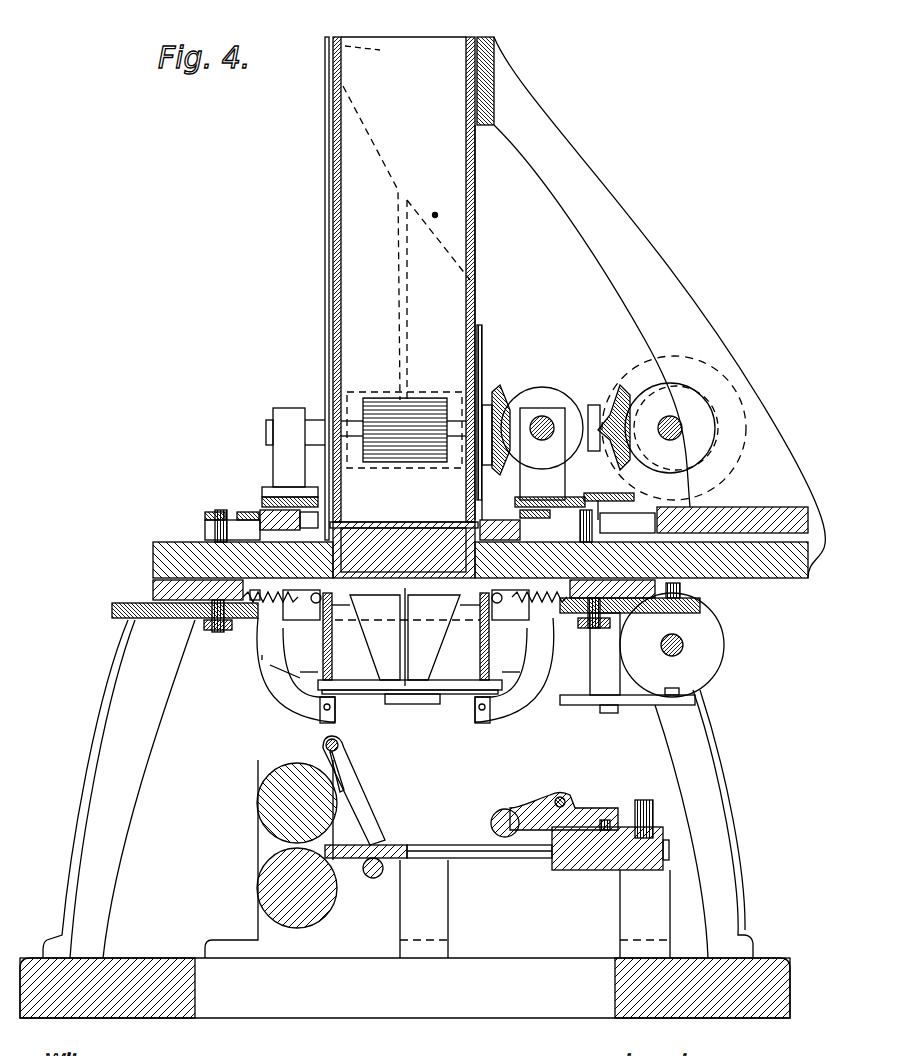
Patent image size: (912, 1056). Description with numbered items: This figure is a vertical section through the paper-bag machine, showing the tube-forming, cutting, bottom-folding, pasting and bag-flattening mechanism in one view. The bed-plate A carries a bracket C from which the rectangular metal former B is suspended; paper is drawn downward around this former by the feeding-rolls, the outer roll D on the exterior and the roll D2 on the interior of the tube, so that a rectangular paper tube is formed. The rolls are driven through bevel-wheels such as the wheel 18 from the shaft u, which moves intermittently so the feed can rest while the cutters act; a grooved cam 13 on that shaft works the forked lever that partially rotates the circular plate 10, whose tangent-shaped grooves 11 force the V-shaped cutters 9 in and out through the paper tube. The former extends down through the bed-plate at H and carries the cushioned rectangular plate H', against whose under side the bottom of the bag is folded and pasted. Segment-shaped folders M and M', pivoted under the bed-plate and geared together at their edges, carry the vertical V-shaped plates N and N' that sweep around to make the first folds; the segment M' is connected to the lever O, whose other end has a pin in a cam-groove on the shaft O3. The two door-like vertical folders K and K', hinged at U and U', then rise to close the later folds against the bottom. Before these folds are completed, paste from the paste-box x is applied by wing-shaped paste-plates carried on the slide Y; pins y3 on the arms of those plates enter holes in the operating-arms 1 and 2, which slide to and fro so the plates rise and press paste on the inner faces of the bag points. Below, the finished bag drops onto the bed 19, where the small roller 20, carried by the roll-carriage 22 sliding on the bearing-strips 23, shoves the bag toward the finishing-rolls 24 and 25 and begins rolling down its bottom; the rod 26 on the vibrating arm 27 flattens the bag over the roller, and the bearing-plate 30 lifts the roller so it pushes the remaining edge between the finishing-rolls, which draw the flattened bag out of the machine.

The rectangular guide or former B is at (406, 223).
The feeding-roll D is at (333, 300).
The bracket C is at (651, 307).
The feeding-roll D2 is at (403, 430).
The shaft u is at (683, 428).
The bevel-wheel 18 is at (676, 428).
The grooved cam 13 is at (706, 372).
The tangent-shaped groove 11 is at (262, 510).
The cutter 9 is at (205, 530).
The circular plate 10 is at (390, 536).
The bed-plate A is at (460, 569).
The lower end of tube-former H is at (404, 550).
The rectangular plate H' is at (403, 550).
The hinge U is at (282, 605).
The hinge U' is at (529, 605).
The segment-shaped folder M is at (336, 629).
The segment-shaped folder M' is at (466, 629).
The vertical V-shaped plate N is at (407, 637).
The vertical V-shaped plate N' is at (434, 637).
The paste-box x is at (349, 660).
The slide Y is at (410, 692).
The vertical folder K is at (296, 670).
The vertical folder K' is at (514, 670).
The operating-arm 1 is at (264, 667).
The operating-arm 2 is at (544, 665).
The pin y3 is at (320, 712).
The lever O is at (694, 590).
The shaft O3 is at (684, 648).
The finishing-roll 24 is at (258, 806).
The finishing-roll 25 is at (258, 887).
The rod 26 is at (338, 743).
The vibrating arm 27 is at (362, 812).
The bearing-plate 30 is at (383, 845).
The bed 19 is at (440, 845).
The small roller 20 is at (503, 818).
The bearing-strip 23 is at (491, 838).
The roll-carriage 22 is at (527, 852).